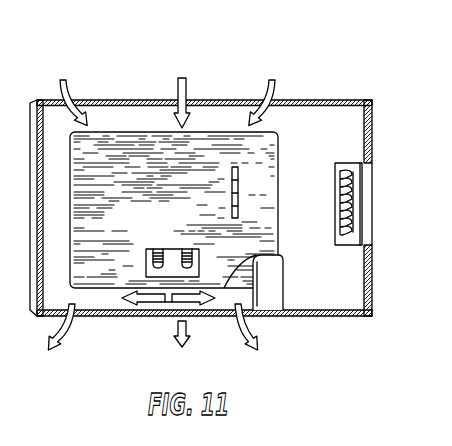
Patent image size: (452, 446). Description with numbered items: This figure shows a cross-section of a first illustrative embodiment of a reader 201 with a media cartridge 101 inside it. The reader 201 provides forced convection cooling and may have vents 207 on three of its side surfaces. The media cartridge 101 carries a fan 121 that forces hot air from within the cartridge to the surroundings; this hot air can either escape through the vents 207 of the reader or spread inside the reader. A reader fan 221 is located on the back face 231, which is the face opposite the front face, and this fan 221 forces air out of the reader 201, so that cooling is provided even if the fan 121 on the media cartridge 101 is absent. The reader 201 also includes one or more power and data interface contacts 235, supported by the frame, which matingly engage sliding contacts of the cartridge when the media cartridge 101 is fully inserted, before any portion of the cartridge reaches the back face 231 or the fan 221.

The reader 201 is at (228, 183).
The vents 207 is at (97, 100).
The media cartridge 101 is at (279, 155).
The fan 121 is at (195, 255).
The reader fan 221 is at (366, 173).
The power and data interface contacts 235 is at (283, 285).
The back face 231 is at (368, 291).